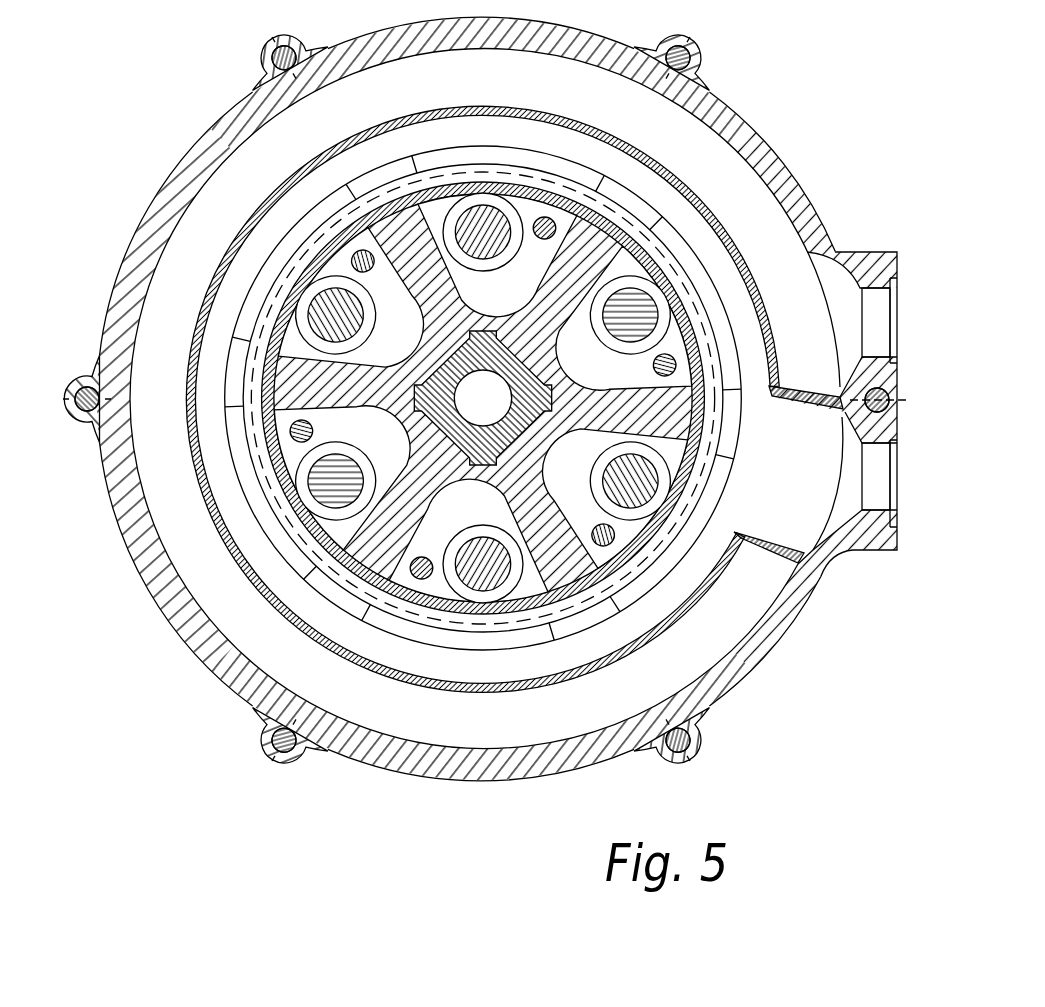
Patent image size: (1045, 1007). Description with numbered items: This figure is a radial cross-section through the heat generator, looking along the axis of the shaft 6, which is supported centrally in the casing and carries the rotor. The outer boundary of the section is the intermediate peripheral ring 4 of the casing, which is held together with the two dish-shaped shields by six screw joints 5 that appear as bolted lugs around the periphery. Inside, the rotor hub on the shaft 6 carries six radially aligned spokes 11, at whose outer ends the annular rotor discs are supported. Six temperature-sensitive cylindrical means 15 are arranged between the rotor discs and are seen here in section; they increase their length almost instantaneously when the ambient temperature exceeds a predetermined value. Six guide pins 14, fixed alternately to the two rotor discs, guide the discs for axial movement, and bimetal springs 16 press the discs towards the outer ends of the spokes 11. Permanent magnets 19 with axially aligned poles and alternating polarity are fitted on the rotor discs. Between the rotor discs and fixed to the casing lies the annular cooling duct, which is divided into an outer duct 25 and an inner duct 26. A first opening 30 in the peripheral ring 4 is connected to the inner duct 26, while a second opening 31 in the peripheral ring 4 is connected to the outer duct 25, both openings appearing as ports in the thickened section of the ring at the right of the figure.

The intermediate peripheral ring 4 is at (743, 662).
The screw joints 5 is at (690, 742).
The shaft 6 is at (477, 360).
The spokes 11 is at (446, 486).
The guide pins 14 is at (297, 434).
The temperature-sensitive cylindrical means 15 is at (655, 298).
The bimetal springs 16 is at (690, 492).
The permanent magnets 19 is at (690, 606).
The outer duct 25 is at (688, 181).
The inner duct 26 is at (518, 146).
The first opening 30 is at (873, 478).
The second opening 31 is at (872, 320).